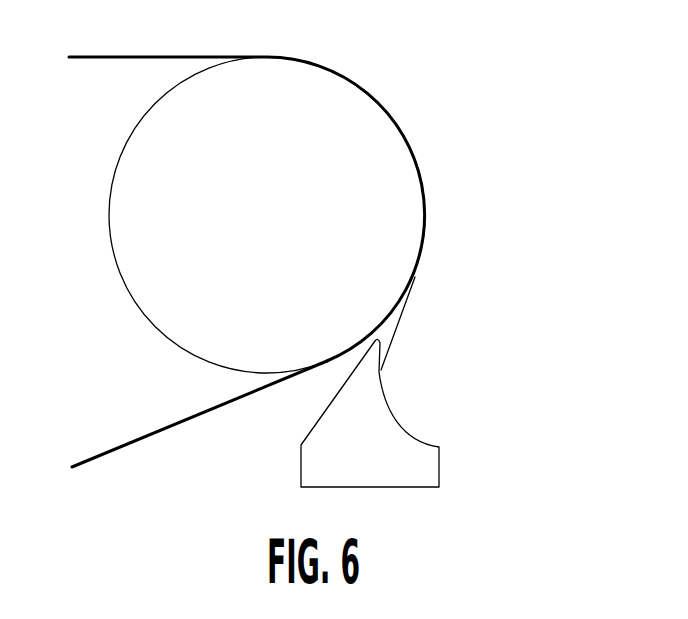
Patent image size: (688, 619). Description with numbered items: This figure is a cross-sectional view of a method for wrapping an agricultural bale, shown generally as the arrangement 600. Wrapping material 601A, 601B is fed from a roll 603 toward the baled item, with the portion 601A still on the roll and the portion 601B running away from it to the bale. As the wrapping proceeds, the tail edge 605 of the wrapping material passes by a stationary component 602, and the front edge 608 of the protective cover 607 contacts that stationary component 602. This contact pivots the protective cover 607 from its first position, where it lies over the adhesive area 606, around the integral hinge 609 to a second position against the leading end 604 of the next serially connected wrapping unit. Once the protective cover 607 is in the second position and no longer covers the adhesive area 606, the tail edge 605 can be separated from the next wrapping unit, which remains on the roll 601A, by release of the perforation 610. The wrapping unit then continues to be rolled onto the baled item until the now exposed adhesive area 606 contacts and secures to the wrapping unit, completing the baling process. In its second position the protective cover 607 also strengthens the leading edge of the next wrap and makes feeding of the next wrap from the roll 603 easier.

The fixing device 600 is at (323, 264).
The wrapping material on roll 601A is at (380, 99).
The wrapping material 601B is at (103, 458).
The stationary component 602 is at (423, 467).
The roll 603 is at (143, 167).
The leading end of the next wrapping unit 604 is at (405, 305).
The tail edge 605 is at (405, 311).
The adhesive area 606 is at (405, 322).
The protective cover 607 is at (405, 322).
The front edge of the protective cover 608 is at (389, 354).
The integral hinge 609 is at (410, 284).
The perforation 610 is at (405, 311).